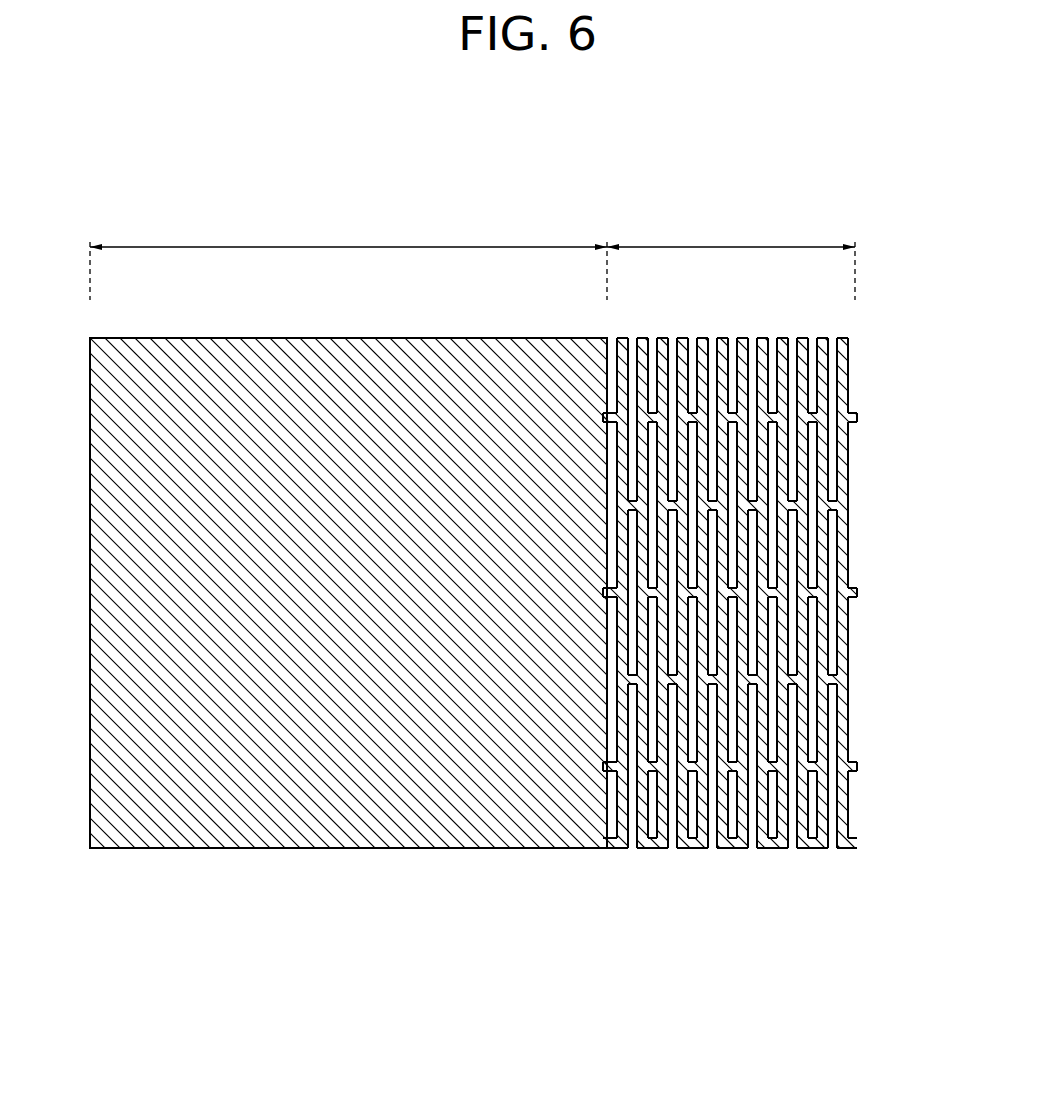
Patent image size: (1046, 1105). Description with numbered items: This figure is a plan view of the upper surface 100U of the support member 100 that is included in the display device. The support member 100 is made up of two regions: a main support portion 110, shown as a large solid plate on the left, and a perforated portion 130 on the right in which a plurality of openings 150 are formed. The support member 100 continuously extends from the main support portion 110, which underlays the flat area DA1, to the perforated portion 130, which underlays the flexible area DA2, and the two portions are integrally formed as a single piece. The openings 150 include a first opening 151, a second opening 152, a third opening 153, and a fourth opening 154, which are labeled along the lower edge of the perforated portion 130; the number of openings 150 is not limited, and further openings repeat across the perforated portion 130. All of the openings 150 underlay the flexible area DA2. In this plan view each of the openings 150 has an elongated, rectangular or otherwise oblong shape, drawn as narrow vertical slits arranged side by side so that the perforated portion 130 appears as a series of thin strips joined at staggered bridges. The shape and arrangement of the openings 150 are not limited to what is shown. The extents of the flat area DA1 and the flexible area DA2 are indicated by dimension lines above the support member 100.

The upper surface 100U is at (876, 217).
The support member 100 is at (523, 668).
The main support portion 110 is at (347, 345).
The perforated portion 130 is at (523, 668).
The openings 150 is at (705, 698).
The first opening 151 is at (612, 848).
The second opening 152 is at (632, 848).
The third opening 153 is at (650, 848).
The fourth opening 154 is at (670, 848).
The flat area DA1 is at (348, 260).
The flexible area DA2 is at (731, 258).